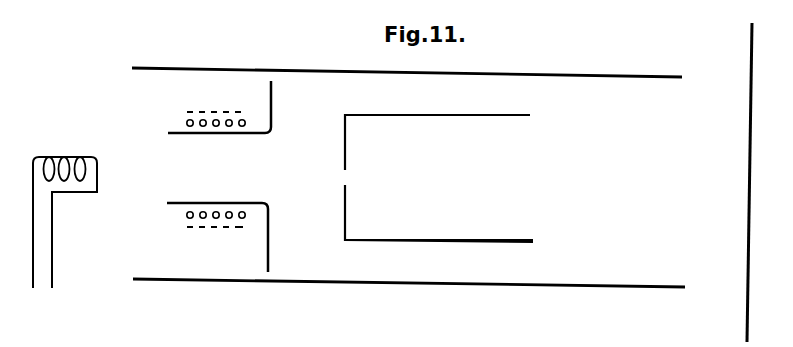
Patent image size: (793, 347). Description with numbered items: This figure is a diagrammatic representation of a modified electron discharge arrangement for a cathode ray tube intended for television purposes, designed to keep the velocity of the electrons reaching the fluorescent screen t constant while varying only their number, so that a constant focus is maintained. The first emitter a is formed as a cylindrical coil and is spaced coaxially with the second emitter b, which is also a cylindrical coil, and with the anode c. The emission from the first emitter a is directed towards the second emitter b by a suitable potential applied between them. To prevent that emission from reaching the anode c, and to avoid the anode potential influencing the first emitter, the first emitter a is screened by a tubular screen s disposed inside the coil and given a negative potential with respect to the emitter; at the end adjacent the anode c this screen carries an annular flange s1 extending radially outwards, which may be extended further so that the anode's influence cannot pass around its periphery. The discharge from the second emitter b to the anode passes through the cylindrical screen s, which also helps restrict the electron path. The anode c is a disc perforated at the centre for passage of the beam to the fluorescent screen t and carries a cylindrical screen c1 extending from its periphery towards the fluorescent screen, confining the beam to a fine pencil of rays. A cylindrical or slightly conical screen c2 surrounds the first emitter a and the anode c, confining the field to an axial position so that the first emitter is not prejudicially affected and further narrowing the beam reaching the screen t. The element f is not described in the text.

The first emitter a is at (202, 218).
The second emitter b is at (97, 175).
The anode c is at (345, 205).
The cylindrical screen of the anode c1 is at (528, 243).
The cylindrical or slightly conical screen c2 is at (387, 285).
The insulating strip f is at (241, 229).
The tubular screen s is at (248, 135).
The annular flange s1 is at (273, 110).
The fluorescent screen t is at (750, 127).